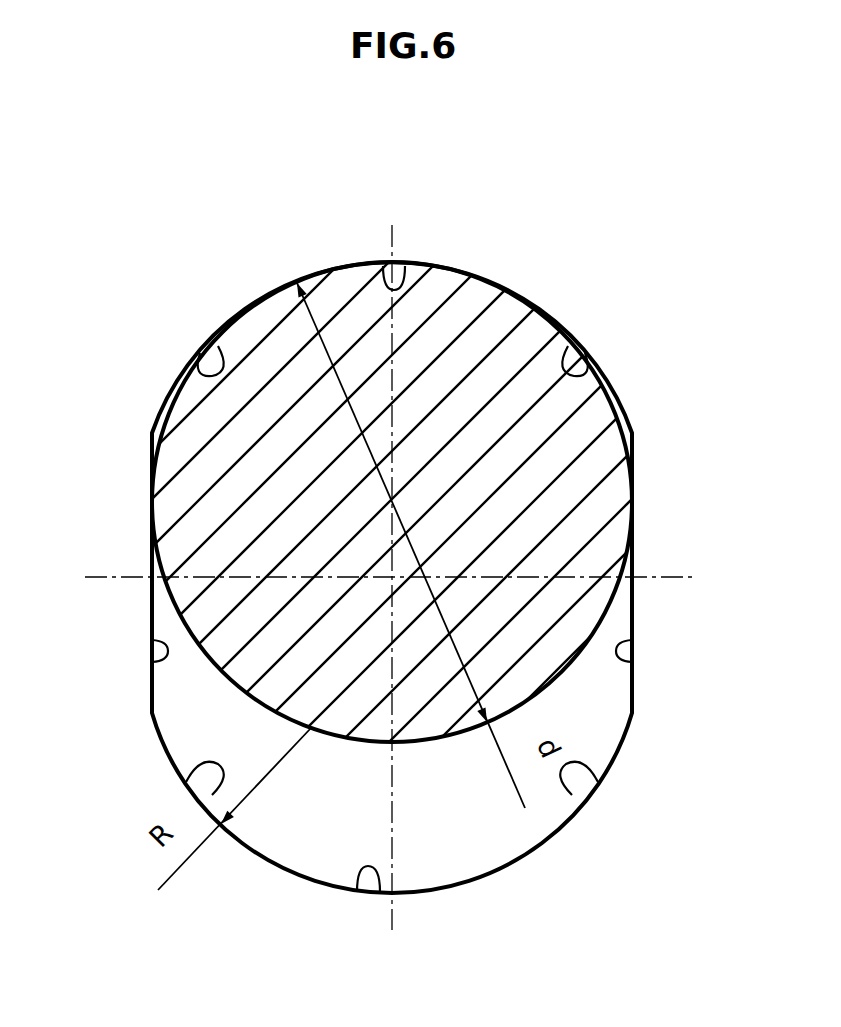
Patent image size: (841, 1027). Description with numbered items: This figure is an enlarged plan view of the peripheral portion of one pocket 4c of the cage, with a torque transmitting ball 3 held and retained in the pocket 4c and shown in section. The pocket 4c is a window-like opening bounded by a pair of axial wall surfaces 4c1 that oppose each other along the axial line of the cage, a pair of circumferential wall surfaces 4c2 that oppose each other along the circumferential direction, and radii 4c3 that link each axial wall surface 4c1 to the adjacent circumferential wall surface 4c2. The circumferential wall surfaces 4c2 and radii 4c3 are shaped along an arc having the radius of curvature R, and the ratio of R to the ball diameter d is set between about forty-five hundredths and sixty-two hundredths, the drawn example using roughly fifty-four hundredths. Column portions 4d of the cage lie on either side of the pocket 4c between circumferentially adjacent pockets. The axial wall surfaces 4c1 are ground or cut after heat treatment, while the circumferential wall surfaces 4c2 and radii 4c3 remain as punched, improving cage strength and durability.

The torque transmitting ball 3 is at (368, 743).
The pocket 4c is at (442, 843).
The axial wall surface 4c1 is at (152, 658).
The circumferential wall surface 4c2 is at (405, 268).
The radius 4c3 is at (212, 355).
The column portion 4d is at (104, 543).